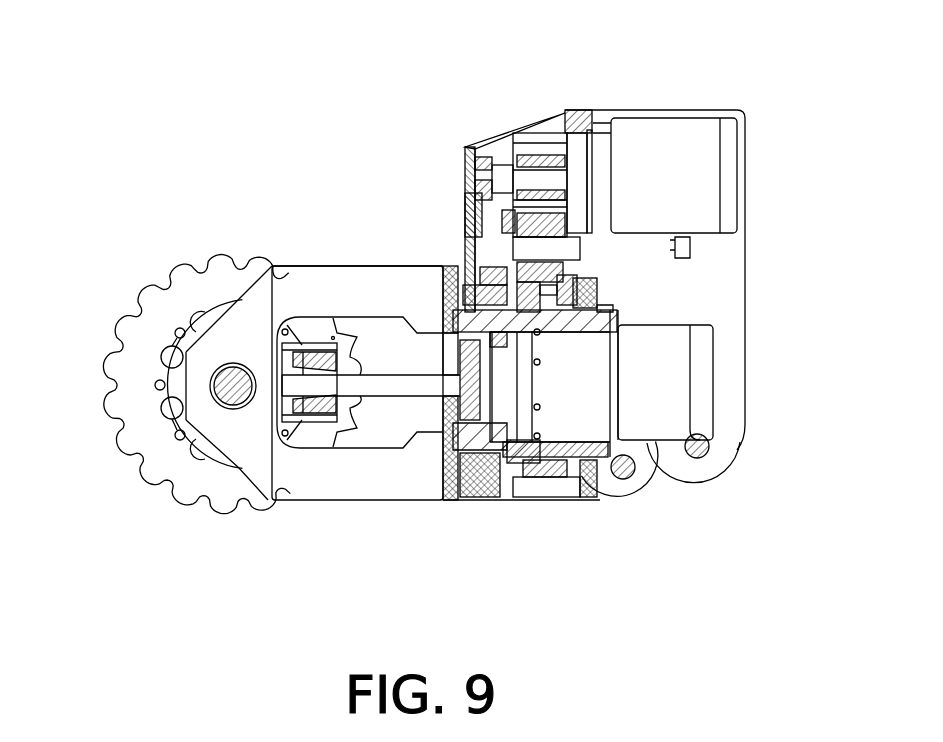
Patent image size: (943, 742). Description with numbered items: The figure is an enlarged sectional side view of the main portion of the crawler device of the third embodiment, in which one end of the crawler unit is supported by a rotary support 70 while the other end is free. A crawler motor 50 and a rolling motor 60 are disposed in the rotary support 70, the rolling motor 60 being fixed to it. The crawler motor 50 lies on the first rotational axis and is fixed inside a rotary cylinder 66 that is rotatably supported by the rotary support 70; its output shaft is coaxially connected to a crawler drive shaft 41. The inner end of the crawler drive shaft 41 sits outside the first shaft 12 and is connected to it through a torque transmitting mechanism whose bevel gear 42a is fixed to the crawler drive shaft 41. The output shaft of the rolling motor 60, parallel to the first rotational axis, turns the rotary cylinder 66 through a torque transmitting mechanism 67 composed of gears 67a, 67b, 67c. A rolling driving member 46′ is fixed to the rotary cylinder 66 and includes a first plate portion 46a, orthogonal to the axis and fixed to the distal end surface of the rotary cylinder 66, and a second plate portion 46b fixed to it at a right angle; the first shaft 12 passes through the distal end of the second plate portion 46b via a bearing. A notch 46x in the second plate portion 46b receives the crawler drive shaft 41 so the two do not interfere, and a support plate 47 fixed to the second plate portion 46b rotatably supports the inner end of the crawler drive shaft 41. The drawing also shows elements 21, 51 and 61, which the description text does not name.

The first shaft 12 is at (239, 390).
The sprocket 21 is at (132, 357).
The crawler drive shaft 41 is at (378, 385).
The bevel gear 42a is at (305, 345).
The rolling driving member 46′ is at (400, 262).
The first plate portion 46a is at (447, 268).
The second plate portion 46b is at (325, 266).
The notch 46x is at (395, 432).
The support plate 47 is at (276, 362).
The crawler motor 50 is at (665, 347).
The housing cover 51 is at (702, 377).
The rolling motor 60 is at (697, 147).
The motor end plate 61 is at (730, 187).
The rotary cylinder 66 is at (550, 322).
The torque transmitting mechanism 67 is at (530, 138).
The gear 67a is at (547, 150).
The gear 67b is at (555, 210).
The gear 67c is at (553, 288).
The rotary support 70 is at (747, 292).